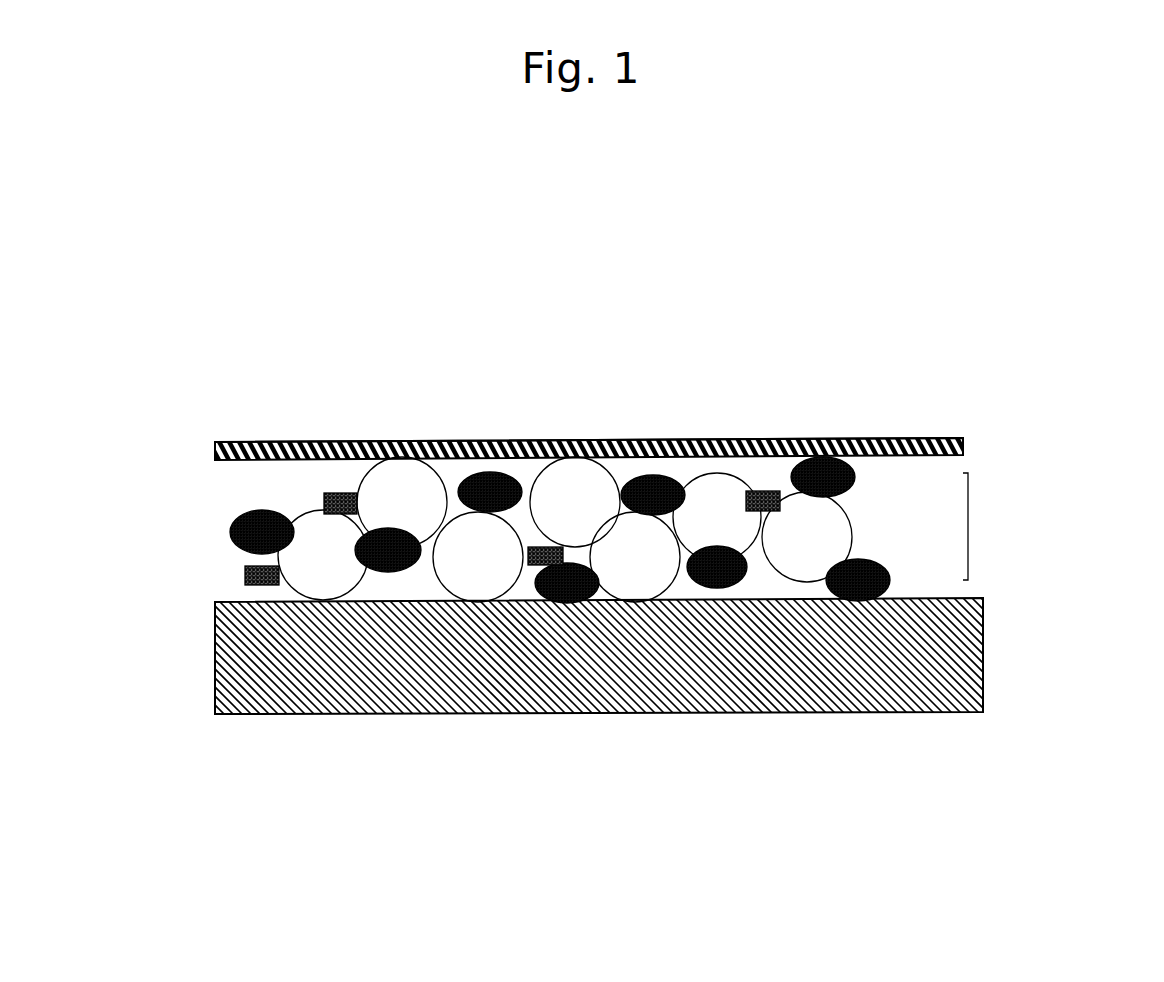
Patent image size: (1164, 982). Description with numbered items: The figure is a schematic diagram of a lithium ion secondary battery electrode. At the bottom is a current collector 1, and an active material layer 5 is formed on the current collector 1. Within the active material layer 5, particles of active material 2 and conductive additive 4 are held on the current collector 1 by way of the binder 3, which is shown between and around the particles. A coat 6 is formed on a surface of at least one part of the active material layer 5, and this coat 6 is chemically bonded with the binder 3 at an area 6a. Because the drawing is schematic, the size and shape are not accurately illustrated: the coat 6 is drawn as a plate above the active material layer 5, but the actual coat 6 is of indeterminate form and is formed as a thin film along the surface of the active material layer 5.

The current collector 1 is at (962, 678).
The active material 2 is at (575, 492).
The binder 3 is at (255, 530).
The conductive additive 4 is at (343, 503).
The active material layer 5 is at (968, 527).
The coat 6 is at (922, 438).
The area 6a is at (840, 438).